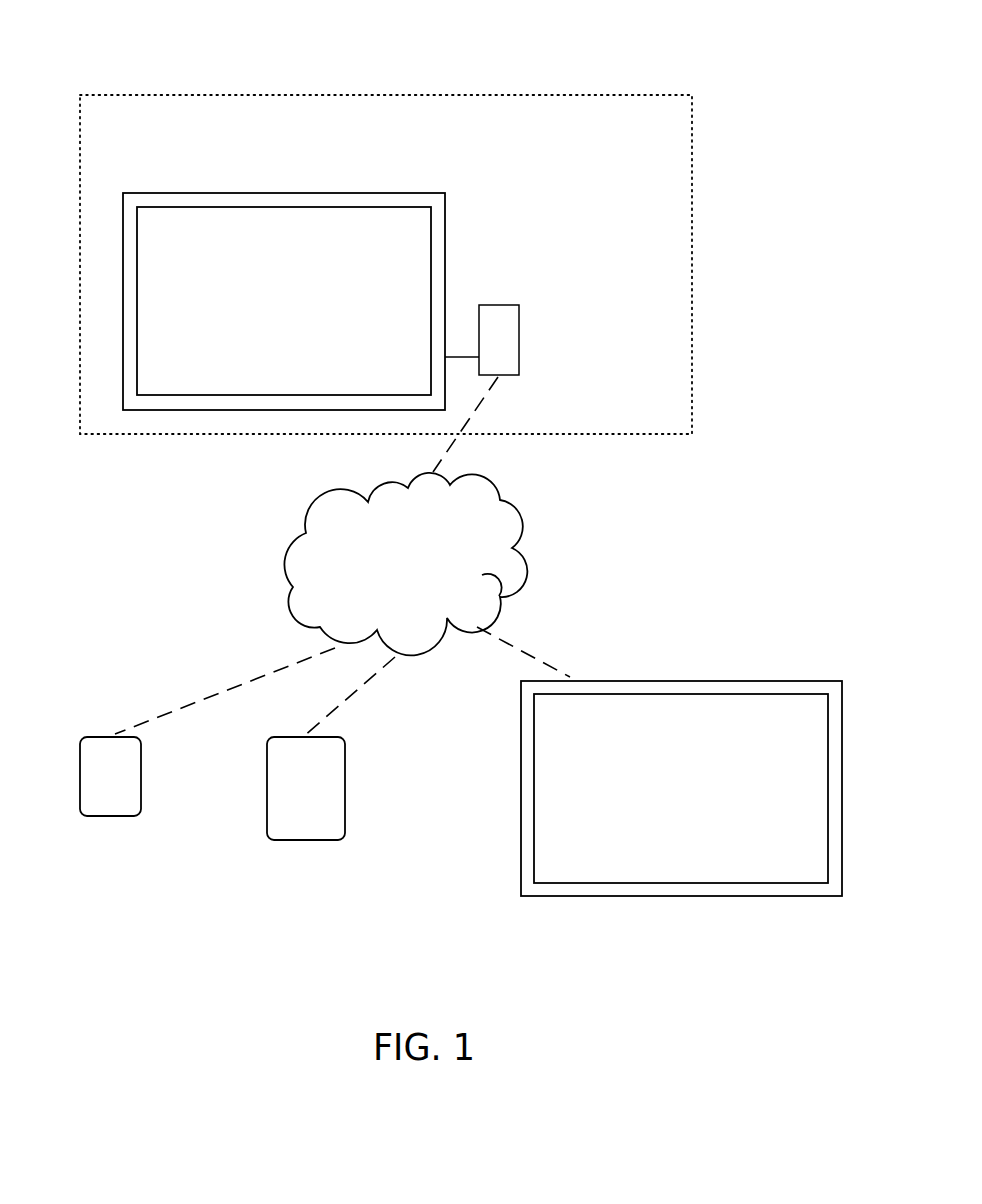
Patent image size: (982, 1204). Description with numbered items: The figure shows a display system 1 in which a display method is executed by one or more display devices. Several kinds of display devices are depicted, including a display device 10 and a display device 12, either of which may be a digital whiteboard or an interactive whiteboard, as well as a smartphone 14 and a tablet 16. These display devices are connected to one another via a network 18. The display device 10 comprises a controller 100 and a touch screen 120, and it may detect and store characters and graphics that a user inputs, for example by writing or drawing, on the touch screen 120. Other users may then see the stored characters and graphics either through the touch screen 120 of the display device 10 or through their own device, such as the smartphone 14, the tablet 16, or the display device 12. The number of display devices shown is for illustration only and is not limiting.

The display system 1 is at (862, 511).
The display device 10 is at (488, 95).
The touch screen 120 is at (363, 193).
The controller 100 is at (490, 305).
The network 18 is at (405, 564).
The smartphone 14 is at (108, 817).
The tablet 16 is at (285, 841).
The display device 12 is at (548, 897).